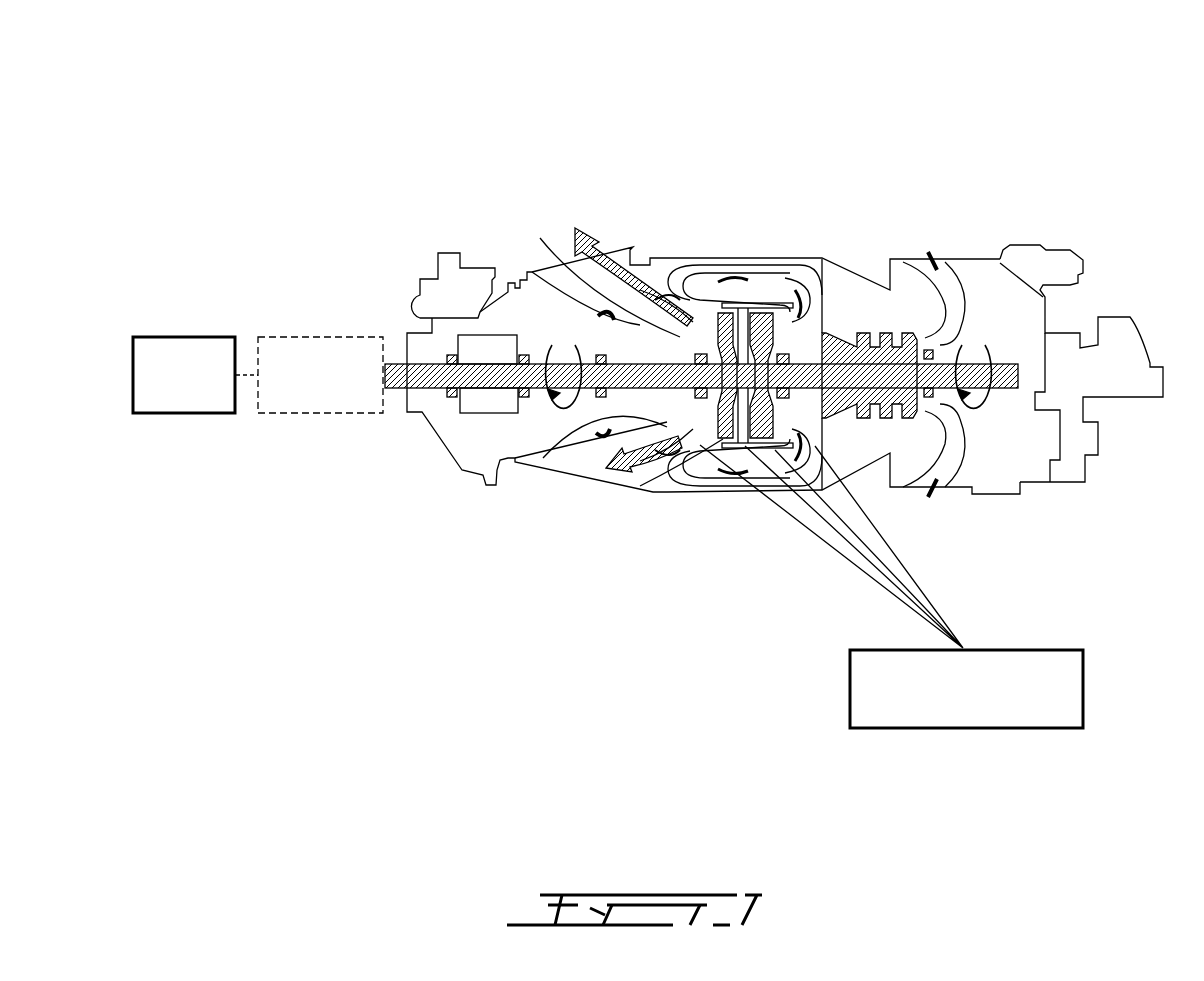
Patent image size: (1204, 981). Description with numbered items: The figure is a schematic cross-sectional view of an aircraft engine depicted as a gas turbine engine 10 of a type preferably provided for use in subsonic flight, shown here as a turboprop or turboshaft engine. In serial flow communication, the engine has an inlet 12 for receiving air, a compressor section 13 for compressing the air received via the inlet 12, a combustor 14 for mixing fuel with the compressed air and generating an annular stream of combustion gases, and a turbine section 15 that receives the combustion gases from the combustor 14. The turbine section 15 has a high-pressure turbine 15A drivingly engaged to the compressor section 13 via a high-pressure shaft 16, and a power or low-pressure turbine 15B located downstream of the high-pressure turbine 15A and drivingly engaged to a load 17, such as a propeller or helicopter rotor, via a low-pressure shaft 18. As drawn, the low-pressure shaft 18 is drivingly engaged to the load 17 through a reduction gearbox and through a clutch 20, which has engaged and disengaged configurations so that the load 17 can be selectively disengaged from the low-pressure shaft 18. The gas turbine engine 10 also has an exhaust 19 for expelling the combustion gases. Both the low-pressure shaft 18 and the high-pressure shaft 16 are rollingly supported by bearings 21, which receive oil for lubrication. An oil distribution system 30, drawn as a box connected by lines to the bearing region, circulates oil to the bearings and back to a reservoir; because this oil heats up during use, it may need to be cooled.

The gas turbine engine 10 is at (750, 146).
The inlet 12 is at (945, 258).
The compressor section 13 is at (856, 330).
The combustor 14 is at (750, 475).
The turbine section 15 is at (712, 313).
The high-pressure turbine 15A is at (797, 478).
The low-pressure turbine 15B is at (702, 445).
The high-pressure shaft 16 is at (778, 292).
The load 17 is at (185, 337).
The low-pressure shaft 18 is at (640, 388).
The exhaust 19 is at (562, 268).
The clutch 20 is at (322, 337).
The bearings 21 is at (665, 340).
The oil distribution system 30 is at (1085, 743).